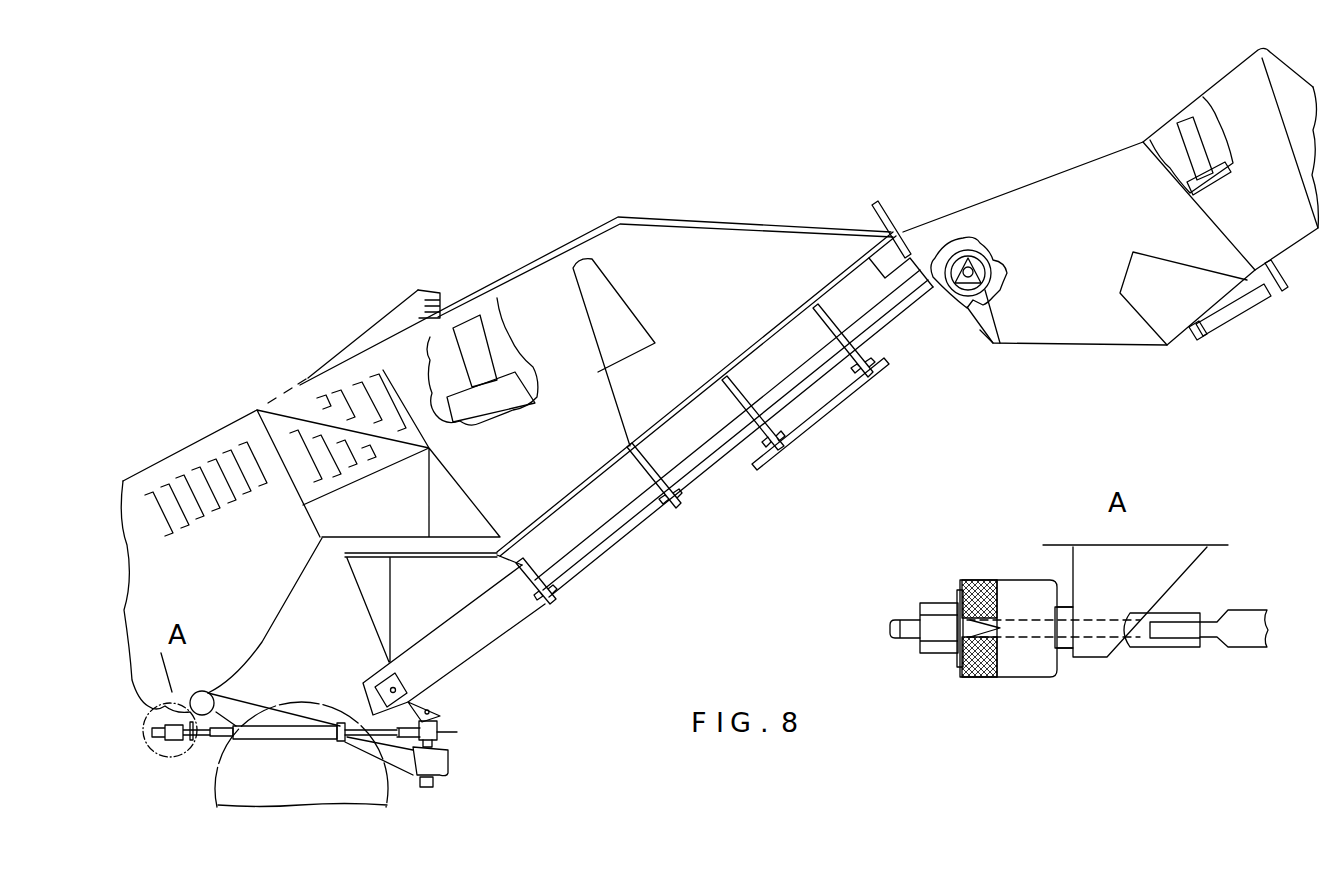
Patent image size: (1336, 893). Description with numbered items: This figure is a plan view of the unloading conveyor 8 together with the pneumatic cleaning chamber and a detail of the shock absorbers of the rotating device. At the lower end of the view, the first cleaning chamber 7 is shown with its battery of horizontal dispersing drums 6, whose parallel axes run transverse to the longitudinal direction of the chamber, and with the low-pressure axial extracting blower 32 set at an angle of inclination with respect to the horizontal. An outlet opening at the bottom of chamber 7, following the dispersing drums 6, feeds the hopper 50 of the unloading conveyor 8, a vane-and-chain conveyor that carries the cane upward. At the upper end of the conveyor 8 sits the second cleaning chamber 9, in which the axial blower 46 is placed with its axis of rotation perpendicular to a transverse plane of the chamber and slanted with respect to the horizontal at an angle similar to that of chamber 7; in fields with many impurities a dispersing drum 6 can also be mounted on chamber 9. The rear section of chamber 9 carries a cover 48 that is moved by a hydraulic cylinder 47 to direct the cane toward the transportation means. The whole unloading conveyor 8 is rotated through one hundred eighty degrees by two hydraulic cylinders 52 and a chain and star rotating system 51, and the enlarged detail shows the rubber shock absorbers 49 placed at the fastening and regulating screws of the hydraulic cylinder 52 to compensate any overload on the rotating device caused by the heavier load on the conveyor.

The dispersing drum 6 is at (990, 285).
The cleaning chamber 7 is at (342, 383).
The unloading conveyor 8 is at (762, 368).
The cleaning chamber 9 is at (1045, 238).
The axial extracting blower 32 is at (470, 335).
The axial blower 46 is at (1182, 143).
The cylinder 47 is at (1257, 300).
The cover 48 is at (1155, 313).
The rubber shock absorber 49 is at (1013, 602).
The hopper 50 is at (457, 585).
The chain and star rotating system 51 is at (437, 727).
The hydraulic cylinder 52 is at (283, 740).